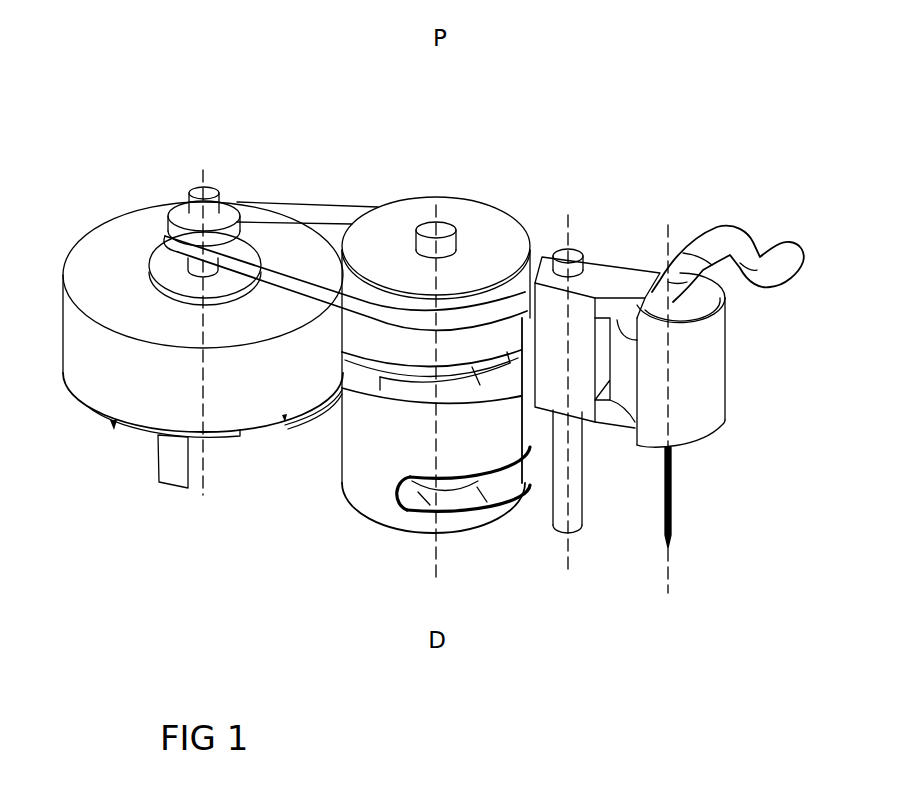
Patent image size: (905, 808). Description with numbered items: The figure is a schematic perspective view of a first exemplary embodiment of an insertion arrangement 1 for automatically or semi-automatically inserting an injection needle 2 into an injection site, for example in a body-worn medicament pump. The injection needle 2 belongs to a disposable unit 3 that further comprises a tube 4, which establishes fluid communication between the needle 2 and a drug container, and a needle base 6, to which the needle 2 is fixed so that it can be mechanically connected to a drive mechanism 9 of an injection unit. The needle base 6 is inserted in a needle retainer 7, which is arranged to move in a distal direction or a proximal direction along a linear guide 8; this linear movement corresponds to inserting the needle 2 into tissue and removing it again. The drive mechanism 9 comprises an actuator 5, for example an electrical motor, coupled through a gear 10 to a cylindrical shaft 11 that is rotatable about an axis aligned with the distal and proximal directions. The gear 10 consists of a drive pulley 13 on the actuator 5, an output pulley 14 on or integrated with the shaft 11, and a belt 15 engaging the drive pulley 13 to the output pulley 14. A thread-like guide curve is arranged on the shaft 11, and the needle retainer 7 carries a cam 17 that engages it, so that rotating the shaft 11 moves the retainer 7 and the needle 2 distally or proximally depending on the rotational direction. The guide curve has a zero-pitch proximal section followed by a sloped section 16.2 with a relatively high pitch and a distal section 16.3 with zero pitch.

The insertion arrangement 1 is at (130, 129).
The injection needle 2 is at (672, 527).
The disposable unit 3 is at (744, 411).
The tube 4 is at (730, 238).
The actuator 5 is at (75, 258).
The needle base 6 is at (715, 340).
The needle retainer 7 is at (608, 273).
The linear guide 8 is at (573, 523).
The drive mechanism 9 is at (227, 507).
The gear 10 is at (233, 110).
The cylindrical shaft 11 is at (403, 523).
The drive pulley 13 is at (227, 208).
The output pulley 14 is at (402, 300).
The belt 15 is at (308, 210).
The sloped section 16.2 is at (380, 387).
The distal section 16.3 is at (473, 500).
The cam 17 is at (508, 353).